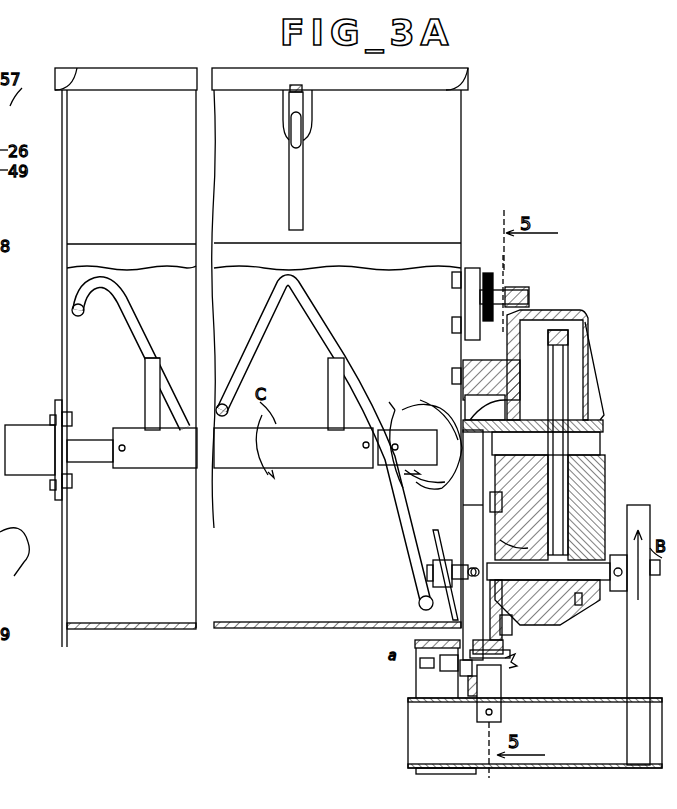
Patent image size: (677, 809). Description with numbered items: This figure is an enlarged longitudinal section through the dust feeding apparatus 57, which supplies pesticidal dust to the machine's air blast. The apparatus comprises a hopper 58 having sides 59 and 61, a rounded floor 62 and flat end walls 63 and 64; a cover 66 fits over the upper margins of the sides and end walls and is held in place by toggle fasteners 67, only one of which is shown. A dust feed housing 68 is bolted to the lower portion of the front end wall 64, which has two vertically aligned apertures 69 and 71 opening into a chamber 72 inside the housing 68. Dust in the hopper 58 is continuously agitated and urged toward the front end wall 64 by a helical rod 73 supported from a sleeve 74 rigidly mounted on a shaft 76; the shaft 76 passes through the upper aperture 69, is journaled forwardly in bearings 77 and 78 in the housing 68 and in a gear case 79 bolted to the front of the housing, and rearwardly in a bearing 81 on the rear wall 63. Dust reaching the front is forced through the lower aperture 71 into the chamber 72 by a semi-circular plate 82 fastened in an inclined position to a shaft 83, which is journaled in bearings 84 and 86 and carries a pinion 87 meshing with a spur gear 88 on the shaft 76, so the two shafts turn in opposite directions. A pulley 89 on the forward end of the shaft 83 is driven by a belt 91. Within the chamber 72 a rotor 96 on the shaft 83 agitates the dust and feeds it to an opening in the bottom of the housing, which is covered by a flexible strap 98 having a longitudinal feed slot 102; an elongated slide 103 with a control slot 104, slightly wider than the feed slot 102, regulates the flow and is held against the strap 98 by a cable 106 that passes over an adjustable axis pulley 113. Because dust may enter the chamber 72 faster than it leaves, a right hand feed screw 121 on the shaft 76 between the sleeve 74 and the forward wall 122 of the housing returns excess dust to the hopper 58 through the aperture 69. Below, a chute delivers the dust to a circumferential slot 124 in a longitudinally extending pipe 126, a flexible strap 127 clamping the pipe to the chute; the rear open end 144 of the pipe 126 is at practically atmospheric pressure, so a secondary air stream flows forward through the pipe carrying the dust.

The cover 66 is at (161, 70).
The rear end wall 63 is at (62, 358).
The hopper 58 is at (463, 150).
The rounded floor 62 is at (306, 624).
The side 59 is at (385, 174).
The side 61 is at (390, 316).
The toggle fastener 67 is at (291, 140).
The helical rod 73 is at (246, 343).
The shaft 76 is at (90, 446).
The sleeve 74 is at (322, 454).
The bearing 81 is at (14, 458).
The front end wall 64 is at (462, 505).
The cable 106 is at (461, 350).
The adjustable axis pulley 113 is at (490, 290).
The gear case 79 is at (585, 377).
The bearing 78 is at (601, 416).
The bearing 77 is at (533, 420).
The spur gear 88 is at (560, 480).
The pinion 87 is at (575, 555).
The bearing 86 is at (566, 586).
The pulley 89 is at (634, 612).
The belt 91 is at (636, 660).
The forward wall 122 is at (484, 493).
The bearing 84 is at (508, 536).
The rotor 96 is at (463, 500).
The lower aperture 71 is at (458, 538).
The semi-circular plate 82 is at (437, 547).
The shaft 83 is at (432, 576).
The upper aperture 69 is at (454, 416).
The right hand feed screw 121 is at (414, 416).
The dust feeding apparatus 57 is at (416, 666).
The chamber 72 is at (506, 622).
The dust feed housing 68 is at (505, 636).
The feed slot 102 is at (510, 650).
The flexible strap 98 is at (515, 660).
The slide 103 is at (504, 674).
The control slot 104 is at (504, 686).
The circumferential slot 124 is at (501, 712).
The pipe 126 is at (455, 728).
The rear open end 144 is at (408, 738).
The flexible strap 127 is at (490, 772).